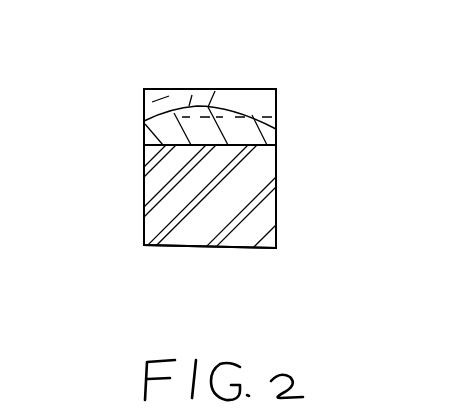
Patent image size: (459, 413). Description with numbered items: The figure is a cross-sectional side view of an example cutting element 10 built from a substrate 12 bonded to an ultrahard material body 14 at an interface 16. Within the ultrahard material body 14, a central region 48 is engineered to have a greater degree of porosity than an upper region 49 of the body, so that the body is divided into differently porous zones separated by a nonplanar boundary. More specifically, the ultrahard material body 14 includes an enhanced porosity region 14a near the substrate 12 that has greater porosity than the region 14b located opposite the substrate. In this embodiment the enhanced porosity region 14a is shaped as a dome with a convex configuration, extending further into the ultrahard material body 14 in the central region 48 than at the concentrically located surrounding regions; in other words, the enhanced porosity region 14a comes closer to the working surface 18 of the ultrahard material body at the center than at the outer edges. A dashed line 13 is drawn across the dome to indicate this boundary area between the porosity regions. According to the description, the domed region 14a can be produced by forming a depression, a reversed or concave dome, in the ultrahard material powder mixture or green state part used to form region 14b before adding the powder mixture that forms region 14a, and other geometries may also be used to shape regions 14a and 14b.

The cutting element 10 is at (110, 254).
The substrate 12 is at (161, 188).
The dashed line 13 is at (276, 115).
The ultrahard material body 14 is at (136, 92).
The enhanced porosity region 14a is at (252, 115).
The region opposite the substrate 14b is at (146, 89).
The interface 16 is at (172, 150).
The working surface 18 is at (169, 96).
The central region 48 is at (215, 91).
The upper region 49 is at (192, 95).